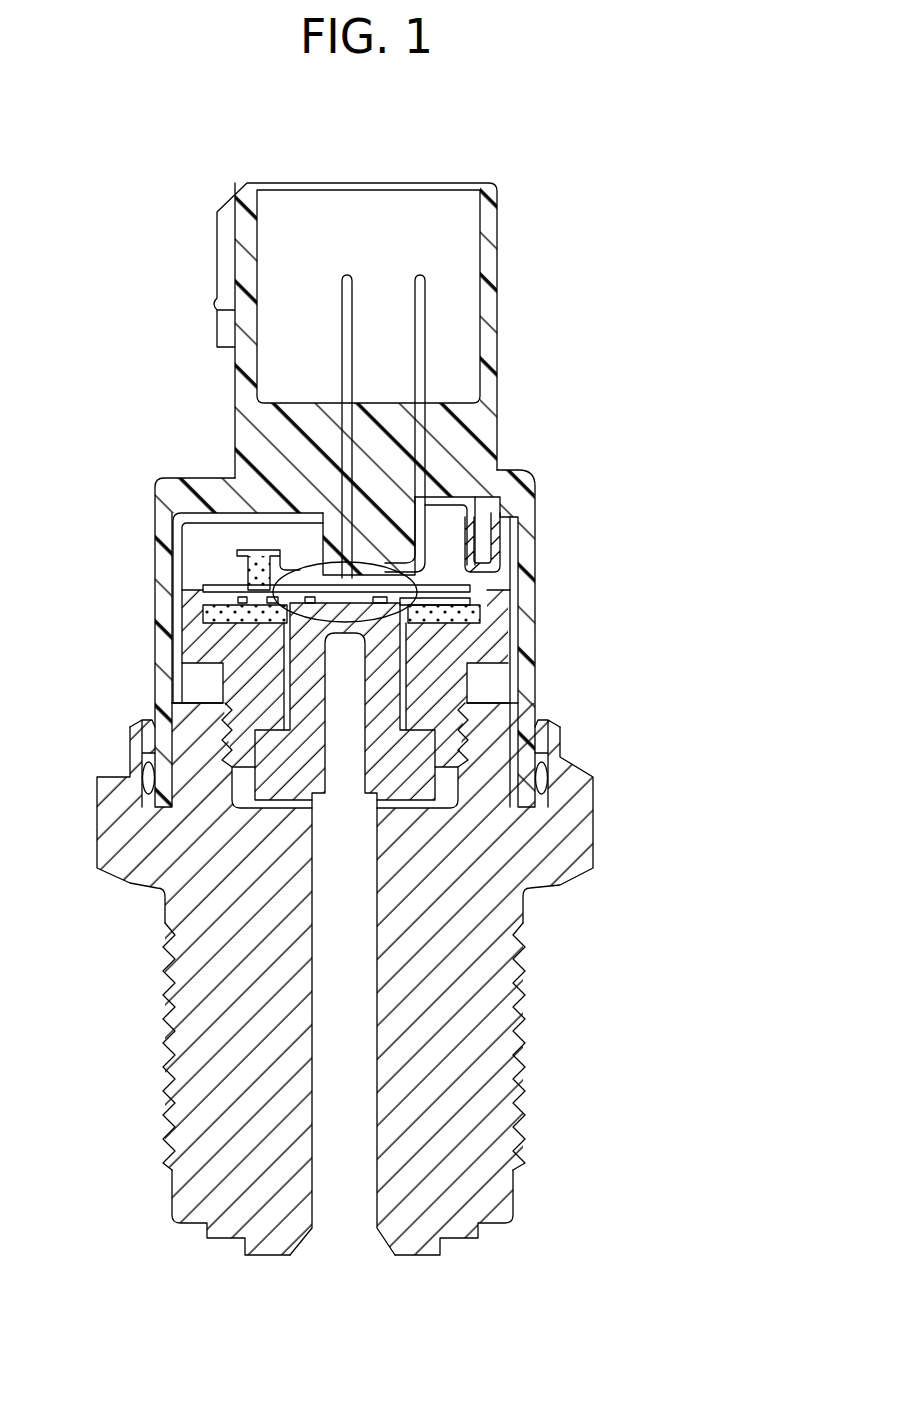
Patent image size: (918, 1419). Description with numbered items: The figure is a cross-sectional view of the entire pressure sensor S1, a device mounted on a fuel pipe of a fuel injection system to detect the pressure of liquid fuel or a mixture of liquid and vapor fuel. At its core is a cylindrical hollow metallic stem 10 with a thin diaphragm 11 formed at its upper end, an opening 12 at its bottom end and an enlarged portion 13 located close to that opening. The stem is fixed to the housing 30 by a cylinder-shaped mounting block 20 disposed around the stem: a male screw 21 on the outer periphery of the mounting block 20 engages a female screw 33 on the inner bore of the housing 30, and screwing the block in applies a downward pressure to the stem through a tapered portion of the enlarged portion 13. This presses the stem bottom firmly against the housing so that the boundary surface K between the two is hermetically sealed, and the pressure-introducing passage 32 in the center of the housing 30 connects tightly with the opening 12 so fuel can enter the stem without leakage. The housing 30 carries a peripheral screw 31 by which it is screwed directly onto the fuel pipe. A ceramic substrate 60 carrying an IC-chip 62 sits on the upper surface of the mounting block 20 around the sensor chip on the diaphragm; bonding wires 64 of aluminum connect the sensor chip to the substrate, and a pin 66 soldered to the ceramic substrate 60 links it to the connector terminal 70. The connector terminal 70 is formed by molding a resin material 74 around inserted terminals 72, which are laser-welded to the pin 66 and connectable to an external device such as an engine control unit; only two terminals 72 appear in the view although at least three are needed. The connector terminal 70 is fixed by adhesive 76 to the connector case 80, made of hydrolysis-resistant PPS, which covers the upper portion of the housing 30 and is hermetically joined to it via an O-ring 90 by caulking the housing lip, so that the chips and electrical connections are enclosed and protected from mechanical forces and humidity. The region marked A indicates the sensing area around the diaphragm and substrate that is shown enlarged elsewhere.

The pressure sensor S1 is at (537, 234).
The metallic stem 10 is at (397, 705).
The diaphragm 11 is at (352, 642).
The opening 12 is at (330, 795).
The enlarged portion 13 is at (215, 820).
The mounting block 20 is at (495, 653).
The male screw 21 is at (465, 728).
The housing 30 is at (535, 917).
The peripheral screw 31 is at (524, 1003).
The pressure-introducing passage 32 is at (341, 1200).
The female screw 33 is at (487, 742).
The ceramic substrate 60 is at (430, 616).
The IC-chip 62 is at (440, 604).
The bonding wires 64 is at (203, 594).
The pin 66 is at (235, 575).
The connector terminal 70 is at (457, 515).
The terminals 72 is at (420, 275).
The resin material 74 is at (337, 523).
The adhesive 76 is at (500, 567).
The connector case 80 is at (488, 355).
The O-ring 90 is at (147, 772).
The region A is at (318, 568).
The boundary surface K is at (392, 806).